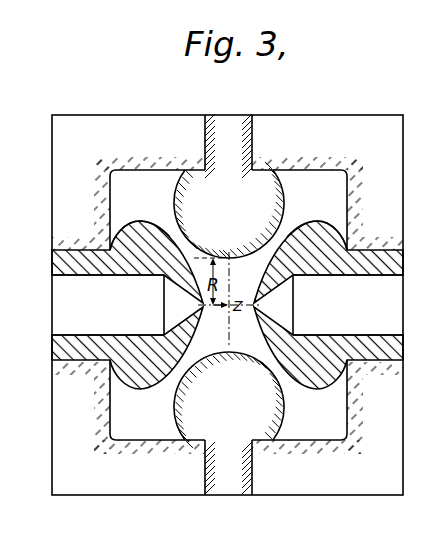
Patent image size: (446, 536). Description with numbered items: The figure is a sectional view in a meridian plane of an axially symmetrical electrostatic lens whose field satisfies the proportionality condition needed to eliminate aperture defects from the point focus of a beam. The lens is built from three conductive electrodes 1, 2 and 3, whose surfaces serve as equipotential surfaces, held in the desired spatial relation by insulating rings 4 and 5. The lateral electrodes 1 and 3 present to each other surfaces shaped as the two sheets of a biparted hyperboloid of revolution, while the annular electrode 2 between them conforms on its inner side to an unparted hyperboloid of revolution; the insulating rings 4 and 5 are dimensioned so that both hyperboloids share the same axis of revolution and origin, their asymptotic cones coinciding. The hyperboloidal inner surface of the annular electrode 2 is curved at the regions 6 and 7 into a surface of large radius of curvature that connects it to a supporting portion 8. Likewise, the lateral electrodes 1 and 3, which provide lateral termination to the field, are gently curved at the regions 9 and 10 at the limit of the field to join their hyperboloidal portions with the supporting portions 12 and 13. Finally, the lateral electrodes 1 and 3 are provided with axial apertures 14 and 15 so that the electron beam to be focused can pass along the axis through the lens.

The electrode 1 is at (127, 262).
The electrode 2 is at (229, 214).
The electrode 3 is at (328, 262).
The insulating ring 4 is at (149, 188).
The insulating ring 5 is at (307, 188).
The curved region 6 is at (176, 201).
The curved region 7 is at (284, 205).
The supporting portion 8 is at (228, 146).
The curved region 9 is at (140, 239).
The curved region 10 is at (317, 239).
The supporting portion 12 is at (66, 277).
The supporting portion 13 is at (381, 268).
The axial aperture 14 is at (201, 306).
The axial aperture 15 is at (256, 306).